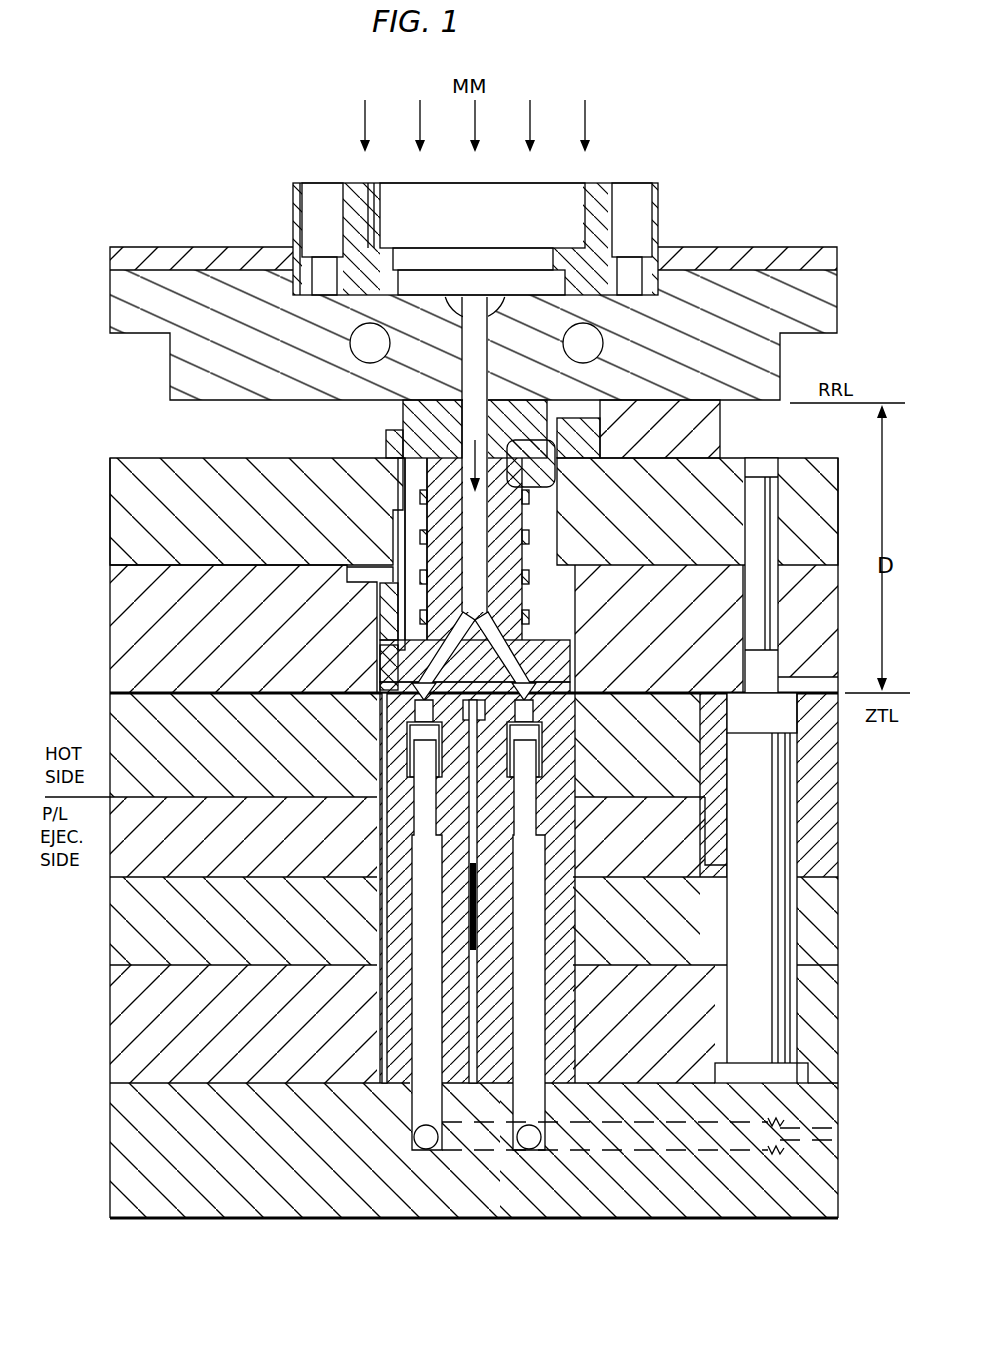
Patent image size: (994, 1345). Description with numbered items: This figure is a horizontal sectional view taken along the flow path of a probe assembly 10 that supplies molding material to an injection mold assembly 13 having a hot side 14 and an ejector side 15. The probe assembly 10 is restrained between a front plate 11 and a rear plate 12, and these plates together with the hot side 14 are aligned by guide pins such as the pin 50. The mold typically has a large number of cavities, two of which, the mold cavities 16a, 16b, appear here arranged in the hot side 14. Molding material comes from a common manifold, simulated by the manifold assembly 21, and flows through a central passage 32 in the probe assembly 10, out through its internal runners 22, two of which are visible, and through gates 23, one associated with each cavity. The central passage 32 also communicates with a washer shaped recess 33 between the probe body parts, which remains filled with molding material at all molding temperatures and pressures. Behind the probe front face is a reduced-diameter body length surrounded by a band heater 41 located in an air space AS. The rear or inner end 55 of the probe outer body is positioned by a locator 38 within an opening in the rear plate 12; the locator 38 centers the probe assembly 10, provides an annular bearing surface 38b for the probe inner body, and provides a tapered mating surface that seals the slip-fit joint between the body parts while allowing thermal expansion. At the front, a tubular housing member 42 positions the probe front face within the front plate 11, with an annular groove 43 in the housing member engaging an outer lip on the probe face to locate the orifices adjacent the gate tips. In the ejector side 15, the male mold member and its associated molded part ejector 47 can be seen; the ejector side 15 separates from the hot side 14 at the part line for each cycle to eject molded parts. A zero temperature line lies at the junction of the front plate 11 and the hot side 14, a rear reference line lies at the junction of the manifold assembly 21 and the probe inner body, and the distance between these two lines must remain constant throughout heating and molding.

The manifold assembly 21 is at (229, 250).
The central passage 32 is at (490, 394).
The rear or inner end 55 is at (565, 425).
The locator 38 is at (600, 470).
The annular bearing surface 38b is at (398, 448).
The band heater 41 is at (400, 488).
The air space AS is at (405, 538).
The tubular housing member 42 is at (398, 592).
The annular groove 43 is at (380, 680).
The washer shaped recess 33 is at (520, 470).
The probe assembly 10 is at (530, 574).
The internal runners 22 is at (545, 650).
The gates 23 is at (578, 686).
The rear plate 12 is at (115, 530).
The front plate 11 is at (115, 645).
The hot side 14 is at (110, 697).
The mold cavity 16a is at (384, 762).
The mold cavity 16b is at (542, 768).
The molded part ejector 47 is at (557, 860).
The injection mold assembly 13 is at (884, 720).
The guide pin 50 is at (800, 1015).
The ejector side 15 is at (92, 875).